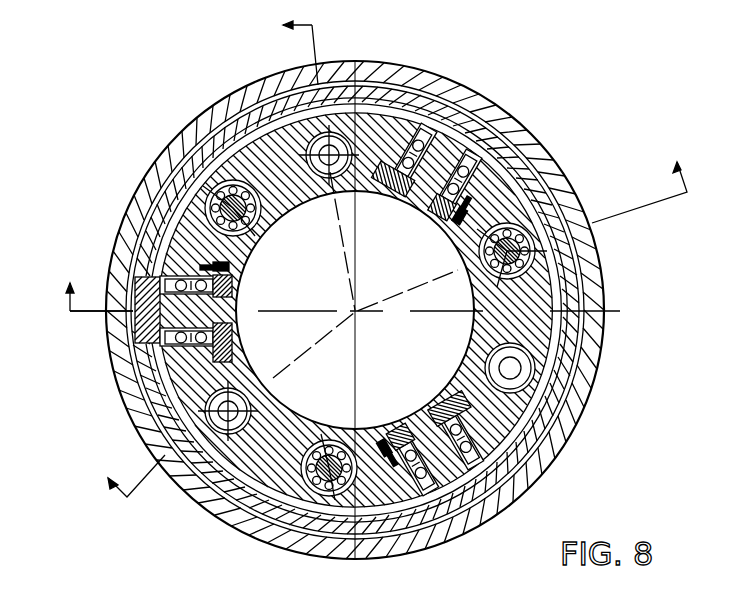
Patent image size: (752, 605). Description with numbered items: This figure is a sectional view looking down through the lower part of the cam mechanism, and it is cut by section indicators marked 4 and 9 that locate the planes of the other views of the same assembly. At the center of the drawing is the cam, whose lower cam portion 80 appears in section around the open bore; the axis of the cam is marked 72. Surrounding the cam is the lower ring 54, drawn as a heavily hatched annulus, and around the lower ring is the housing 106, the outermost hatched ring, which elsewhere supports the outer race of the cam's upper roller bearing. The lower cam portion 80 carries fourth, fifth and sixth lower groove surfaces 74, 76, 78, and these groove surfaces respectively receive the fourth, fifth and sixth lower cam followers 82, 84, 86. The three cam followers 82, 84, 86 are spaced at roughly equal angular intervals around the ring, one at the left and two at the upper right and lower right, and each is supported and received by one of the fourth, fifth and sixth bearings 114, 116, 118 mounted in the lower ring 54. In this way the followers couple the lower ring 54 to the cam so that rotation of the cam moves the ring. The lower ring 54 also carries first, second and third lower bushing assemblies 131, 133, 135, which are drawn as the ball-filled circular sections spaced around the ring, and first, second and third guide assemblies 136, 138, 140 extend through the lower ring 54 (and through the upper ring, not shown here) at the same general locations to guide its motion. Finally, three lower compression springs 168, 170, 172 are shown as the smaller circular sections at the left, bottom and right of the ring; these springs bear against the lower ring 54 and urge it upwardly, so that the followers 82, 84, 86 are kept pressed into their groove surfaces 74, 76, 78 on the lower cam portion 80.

The section line 4- 4 is at (366, 226).
The section line 9- 9 is at (199, 260).
The lower ring 54 is at (537, 330).
The central axis 72 is at (358, 313).
The fourth lower groove surface 74 is at (148, 373).
The fifth lower groove surface 76 is at (533, 433).
The sixth lower groove surface 78 is at (407, 98).
The lower cam portion 80 is at (182, 185).
The fourth lower cam follower 82 is at (147, 322).
The fifth lower cam follower 84 is at (497, 513).
The sixth lower cam follower 86 is at (445, 125).
The housing 106 is at (540, 475).
The fourth bearing 114 is at (195, 278).
The fifth bearing 116 is at (418, 480).
The sixth bearing 118 is at (498, 150).
The first lower bushing assembly 131 is at (252, 222).
The second lower bushing assembly 133 is at (332, 437).
The third lower bushing assembly 135 is at (533, 220).
The first guide assembly 136 is at (222, 180).
The second guide assembly 138 is at (305, 495).
The third guide assembly 140 is at (533, 252).
The lower compression spring 168 is at (205, 415).
The lower compression spring 170 is at (538, 374).
The lower compression spring 172 is at (308, 143).